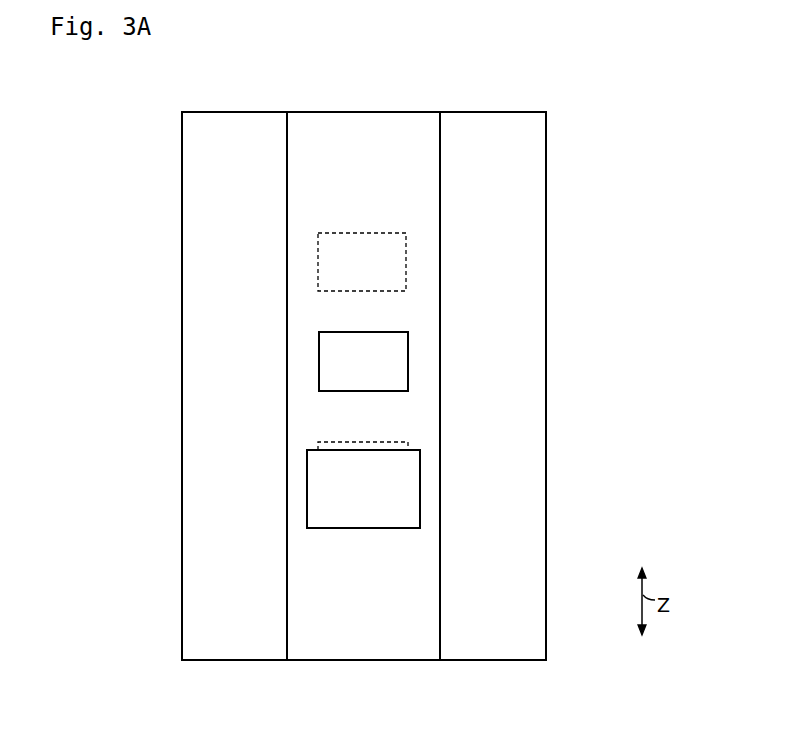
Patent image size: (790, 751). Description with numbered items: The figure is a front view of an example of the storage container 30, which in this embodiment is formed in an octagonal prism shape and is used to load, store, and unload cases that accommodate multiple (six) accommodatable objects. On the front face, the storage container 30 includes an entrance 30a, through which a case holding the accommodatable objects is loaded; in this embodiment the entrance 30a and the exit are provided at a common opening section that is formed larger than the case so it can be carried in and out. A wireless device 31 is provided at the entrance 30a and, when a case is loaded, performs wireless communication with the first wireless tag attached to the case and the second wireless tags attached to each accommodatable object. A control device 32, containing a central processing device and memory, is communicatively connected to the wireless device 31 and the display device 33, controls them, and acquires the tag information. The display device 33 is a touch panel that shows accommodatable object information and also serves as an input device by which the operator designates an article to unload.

The storage container 30 is at (363, 112).
The wireless device 31 is at (339, 442).
The control device 32 is at (334, 233).
The display device 33 is at (332, 332).
The entrance 30a is at (368, 521).